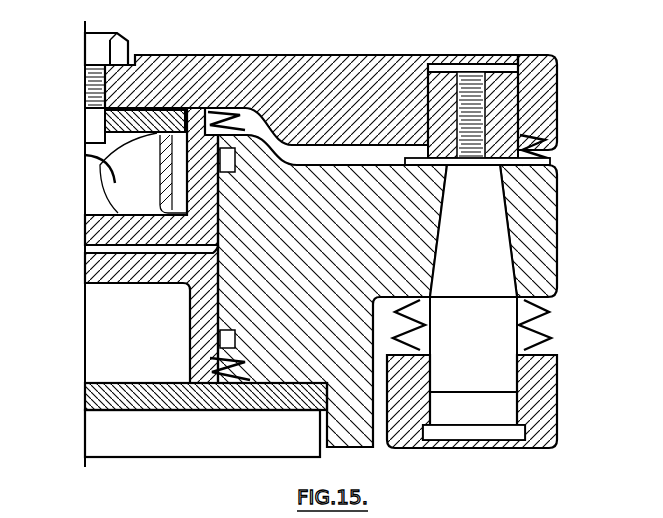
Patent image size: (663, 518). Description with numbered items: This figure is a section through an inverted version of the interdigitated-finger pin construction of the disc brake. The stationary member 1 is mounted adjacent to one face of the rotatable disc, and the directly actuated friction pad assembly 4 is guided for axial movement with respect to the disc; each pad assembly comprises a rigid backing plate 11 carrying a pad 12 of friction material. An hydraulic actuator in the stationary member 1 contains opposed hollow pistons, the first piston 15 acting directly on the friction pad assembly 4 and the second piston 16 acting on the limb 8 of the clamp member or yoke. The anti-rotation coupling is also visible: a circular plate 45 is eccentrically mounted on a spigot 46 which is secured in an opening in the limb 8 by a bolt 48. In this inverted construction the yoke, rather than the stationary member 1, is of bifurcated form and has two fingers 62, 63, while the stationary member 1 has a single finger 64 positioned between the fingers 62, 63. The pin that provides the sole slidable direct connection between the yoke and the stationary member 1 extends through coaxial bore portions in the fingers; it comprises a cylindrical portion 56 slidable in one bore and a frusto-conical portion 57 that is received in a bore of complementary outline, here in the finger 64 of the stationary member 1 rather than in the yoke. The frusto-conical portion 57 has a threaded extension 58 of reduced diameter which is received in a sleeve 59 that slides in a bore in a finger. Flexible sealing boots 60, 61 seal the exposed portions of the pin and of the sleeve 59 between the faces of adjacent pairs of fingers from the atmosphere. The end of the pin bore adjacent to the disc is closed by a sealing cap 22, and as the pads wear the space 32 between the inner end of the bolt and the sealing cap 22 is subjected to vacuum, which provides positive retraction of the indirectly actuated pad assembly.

The stationary member 1 is at (523, 210).
The directly actuated friction pad assembly 4 is at (218, 436).
The limb 8 is at (333, 82).
The rigid backing plate 11 is at (108, 398).
The pad of friction material 12 is at (112, 442).
The first piston 15 is at (115, 268).
The second piston 16 is at (108, 230).
The sealing cap 22 is at (510, 450).
The space 32 is at (458, 435).
The circular plate 45 is at (85, 157).
The spigot 46 is at (95, 127).
The bolt 48 is at (118, 53).
The cylindrical portion 56 is at (490, 377).
The frusto-conical portion 57 is at (480, 268).
The threaded extension 58 is at (542, 135).
The sleeve 59 is at (535, 90).
The flexible sealing boot 60 is at (547, 328).
The flexible sealing boot 61 is at (535, 165).
The finger 62 is at (540, 110).
The finger 63 is at (540, 400).
The finger 64 is at (545, 225).